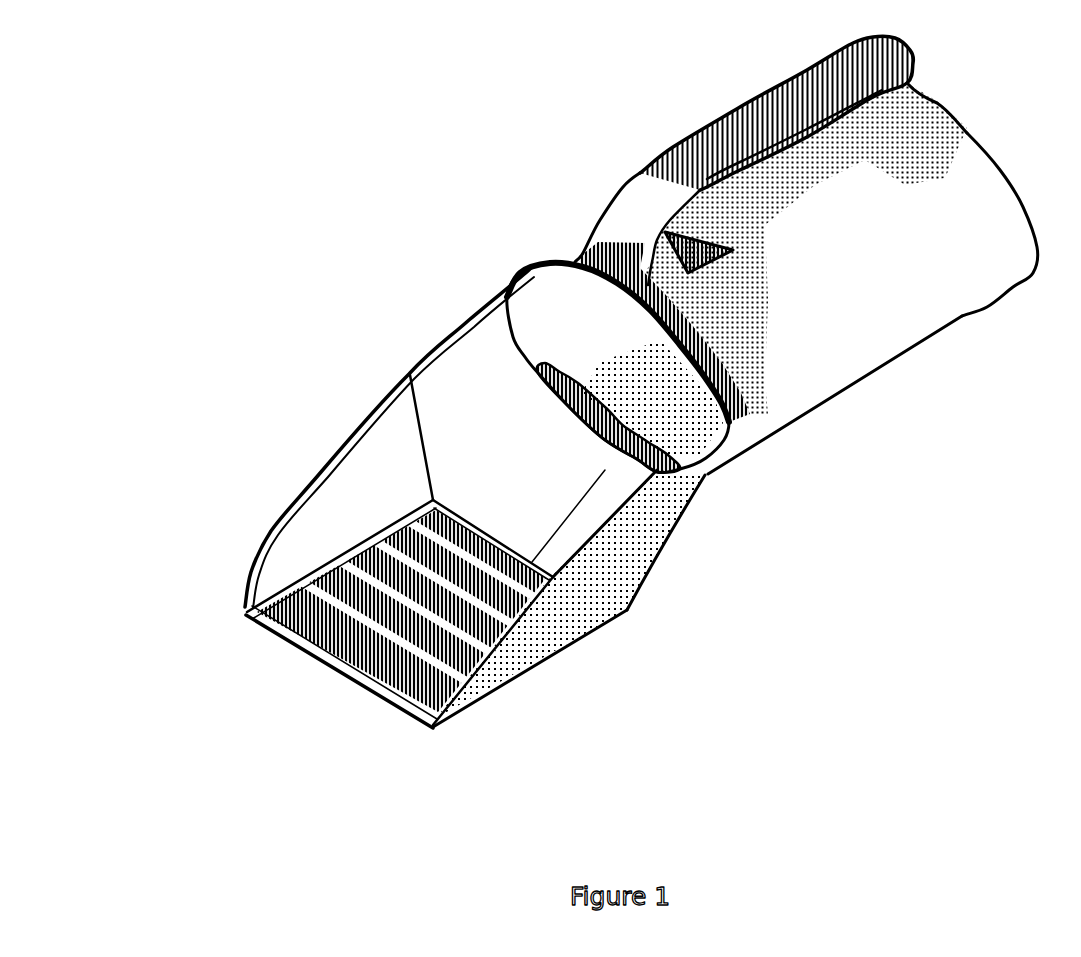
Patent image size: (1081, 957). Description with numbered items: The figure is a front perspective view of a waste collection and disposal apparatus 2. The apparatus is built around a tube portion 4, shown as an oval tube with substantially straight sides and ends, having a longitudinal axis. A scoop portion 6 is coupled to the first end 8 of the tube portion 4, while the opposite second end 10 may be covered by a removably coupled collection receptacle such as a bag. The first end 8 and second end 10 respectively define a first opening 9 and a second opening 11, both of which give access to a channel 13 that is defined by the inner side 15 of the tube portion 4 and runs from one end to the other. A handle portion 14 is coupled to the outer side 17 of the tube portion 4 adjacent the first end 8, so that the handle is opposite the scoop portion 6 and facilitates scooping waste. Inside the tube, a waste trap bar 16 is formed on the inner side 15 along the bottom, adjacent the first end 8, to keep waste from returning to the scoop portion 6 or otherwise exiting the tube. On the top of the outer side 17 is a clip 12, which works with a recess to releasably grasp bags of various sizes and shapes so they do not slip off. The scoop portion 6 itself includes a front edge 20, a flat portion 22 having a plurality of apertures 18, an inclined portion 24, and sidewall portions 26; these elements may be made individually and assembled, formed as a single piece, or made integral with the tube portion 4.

The waste collection and disposal apparatus 2 is at (266, 110).
The tube portion 4 is at (900, 424).
The scoop portion 6 is at (602, 688).
The first end 8 is at (530, 267).
The first opening 9 is at (527, 332).
The second end 10 is at (1022, 205).
The second opening 11 is at (947, 100).
The clip 12 is at (733, 255).
The channel 13 is at (633, 370).
The handle portion 14 is at (705, 112).
The inner side 15 is at (537, 312).
The waste trap bar 16 is at (560, 403).
The outer side 17 is at (958, 318).
The apertures 18 is at (373, 703).
The front edge 20 is at (430, 733).
The flat portion 22 is at (250, 617).
The inclined portion 24 is at (672, 507).
The sidewall portions 26 is at (337, 488).